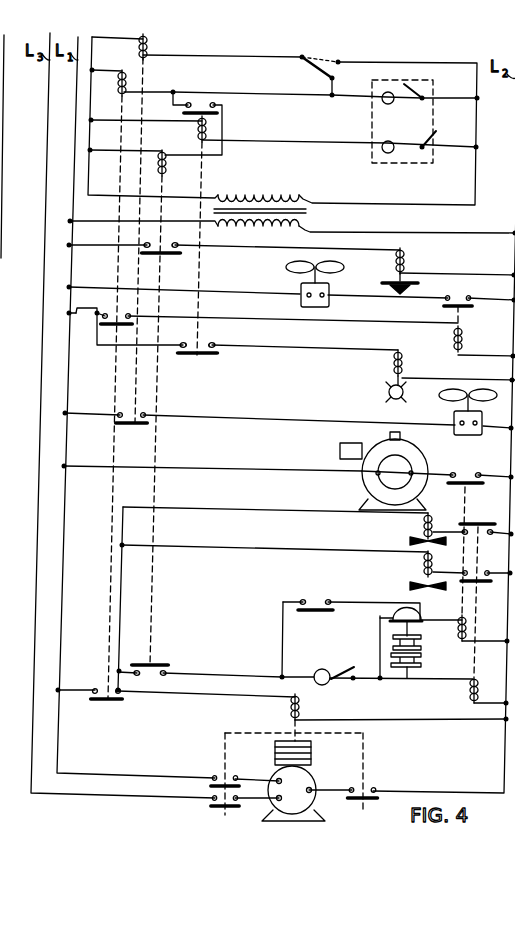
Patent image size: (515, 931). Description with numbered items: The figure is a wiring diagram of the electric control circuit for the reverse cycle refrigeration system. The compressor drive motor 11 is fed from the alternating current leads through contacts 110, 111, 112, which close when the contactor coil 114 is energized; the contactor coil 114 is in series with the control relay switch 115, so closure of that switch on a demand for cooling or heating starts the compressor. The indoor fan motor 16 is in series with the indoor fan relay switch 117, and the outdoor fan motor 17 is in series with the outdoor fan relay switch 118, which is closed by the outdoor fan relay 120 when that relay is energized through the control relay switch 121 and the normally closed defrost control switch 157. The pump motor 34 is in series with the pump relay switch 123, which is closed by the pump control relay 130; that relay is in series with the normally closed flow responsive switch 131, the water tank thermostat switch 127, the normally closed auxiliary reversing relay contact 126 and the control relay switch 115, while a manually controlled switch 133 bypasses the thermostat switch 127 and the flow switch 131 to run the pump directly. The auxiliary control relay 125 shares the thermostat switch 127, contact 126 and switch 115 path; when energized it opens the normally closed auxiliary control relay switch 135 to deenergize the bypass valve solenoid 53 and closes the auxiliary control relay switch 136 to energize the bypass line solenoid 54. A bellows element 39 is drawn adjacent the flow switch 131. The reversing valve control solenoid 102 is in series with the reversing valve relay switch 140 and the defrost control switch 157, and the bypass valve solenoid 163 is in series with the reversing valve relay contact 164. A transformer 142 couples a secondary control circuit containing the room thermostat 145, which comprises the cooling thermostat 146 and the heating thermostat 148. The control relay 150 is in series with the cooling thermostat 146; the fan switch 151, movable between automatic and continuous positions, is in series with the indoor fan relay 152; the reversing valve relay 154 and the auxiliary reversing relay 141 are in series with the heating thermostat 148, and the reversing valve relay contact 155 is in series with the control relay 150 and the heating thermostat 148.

The compressor drive motor 11 is at (293, 781).
The indoor fan motor 16 is at (468, 441).
The outdoor fan motor 17 is at (329, 304).
The pump motor 34 is at (384, 471).
The bellows pressure switch 39 is at (422, 651).
The bypass valve solenoid 53 is at (424, 526).
The bypass line solenoid 54 is at (424, 568).
The reversing valve control solenoid 102 is at (392, 363).
The contact 110 is at (212, 786).
The contact 111 is at (374, 799).
The contact 112 is at (212, 806).
The contactor coil 114 is at (289, 709).
The control relay switch 115 is at (107, 700).
The indoor fan relay switch 117 is at (147, 422).
The outdoor fan relay switch 118 is at (462, 303).
The outdoor fan relay 120 is at (453, 338).
The control relay switch 121 is at (100, 328).
The pump relay switch 123 is at (465, 482).
The auxiliary control relay 125 is at (468, 698).
The auxiliary reversing relay contact 126 is at (146, 669).
The water tank thermostat switch 127 is at (346, 676).
The pump control relay 130 is at (461, 617).
The flow responsive switch 131 is at (396, 614).
The manually controlled switch 133 is at (323, 608).
The auxiliary control relay switch 135 is at (480, 522).
The auxiliary control relay switch 136 is at (487, 578).
The reversing valve relay switch 140 is at (197, 357).
The auxiliary reversing relay 141 is at (166, 165).
The transformer 142 is at (312, 217).
The room thermostat 145 is at (435, 84).
The cooling thermostat 146 is at (408, 85).
The heating thermostat 148 is at (436, 131).
The control relay 150 is at (129, 86).
The fan switch 151 is at (318, 66).
The indoor fan relay 152 is at (147, 47).
The reversing valve relay 154 is at (197, 133).
The reversing valve relay contact 155 is at (204, 112).
The defrost control switch 157 is at (99, 311).
The bypass valve solenoid 163 is at (405, 265).
The reversing valve relay contact 164 is at (161, 257).